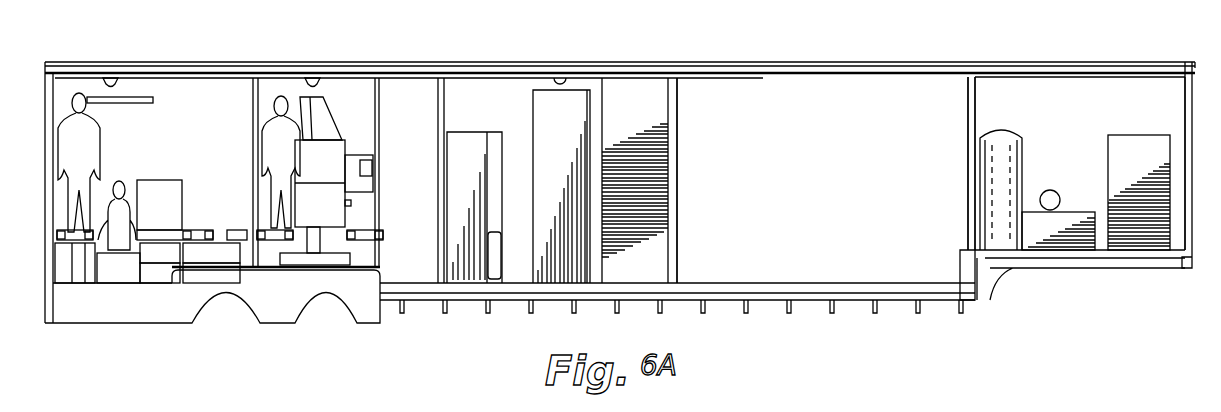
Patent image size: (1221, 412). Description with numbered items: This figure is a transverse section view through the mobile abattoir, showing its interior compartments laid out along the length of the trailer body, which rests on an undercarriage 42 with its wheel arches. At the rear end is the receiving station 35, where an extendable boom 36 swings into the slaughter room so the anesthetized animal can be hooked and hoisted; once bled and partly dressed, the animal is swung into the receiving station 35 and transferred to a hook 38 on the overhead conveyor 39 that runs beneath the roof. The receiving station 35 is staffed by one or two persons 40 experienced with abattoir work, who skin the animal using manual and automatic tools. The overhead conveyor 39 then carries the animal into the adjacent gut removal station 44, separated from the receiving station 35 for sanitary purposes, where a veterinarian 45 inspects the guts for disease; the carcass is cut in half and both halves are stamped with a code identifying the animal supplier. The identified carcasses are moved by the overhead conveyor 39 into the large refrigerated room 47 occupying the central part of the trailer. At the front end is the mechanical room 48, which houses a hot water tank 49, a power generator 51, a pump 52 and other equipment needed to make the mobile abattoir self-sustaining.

The receiving station 35 is at (223, 164).
The extendable boom 36 is at (135, 95).
The hook 38 is at (105, 78).
The overhead conveyor 39 is at (562, 78).
The persons 40 is at (121, 181).
The chassis 42 is at (168, 283).
The gut removal station 44 is at (368, 113).
The veterinarian 45 is at (270, 130).
The refrigerated room 47 is at (822, 168).
The mechanical room 48 is at (1087, 113).
The hot water tank 49 is at (1002, 152).
The power generator 51 is at (1128, 150).
The pump 52 is at (1080, 205).